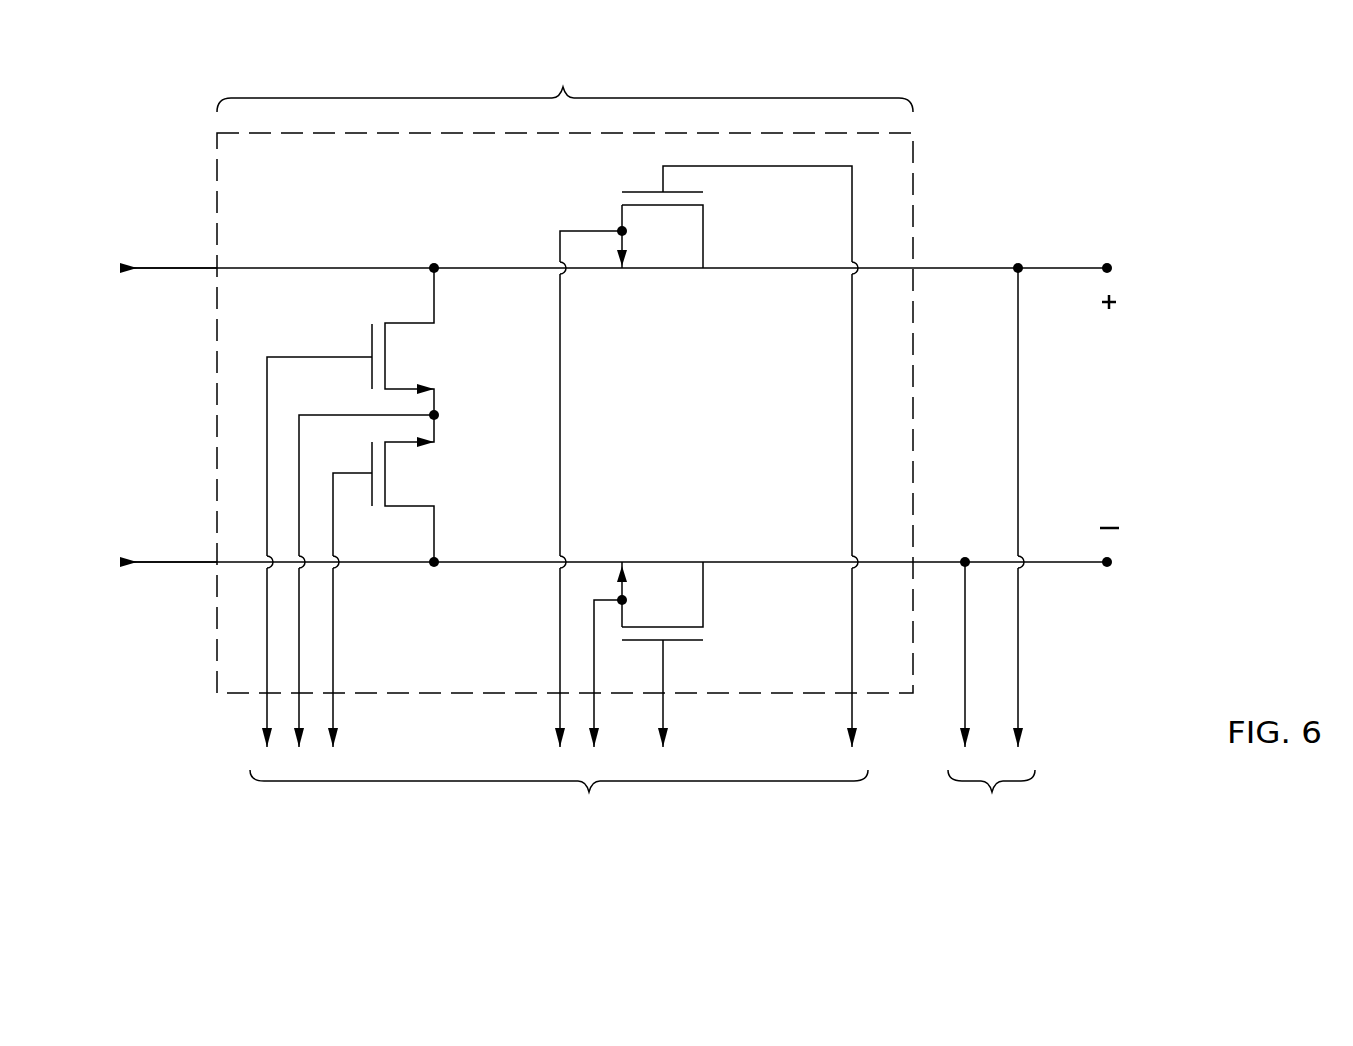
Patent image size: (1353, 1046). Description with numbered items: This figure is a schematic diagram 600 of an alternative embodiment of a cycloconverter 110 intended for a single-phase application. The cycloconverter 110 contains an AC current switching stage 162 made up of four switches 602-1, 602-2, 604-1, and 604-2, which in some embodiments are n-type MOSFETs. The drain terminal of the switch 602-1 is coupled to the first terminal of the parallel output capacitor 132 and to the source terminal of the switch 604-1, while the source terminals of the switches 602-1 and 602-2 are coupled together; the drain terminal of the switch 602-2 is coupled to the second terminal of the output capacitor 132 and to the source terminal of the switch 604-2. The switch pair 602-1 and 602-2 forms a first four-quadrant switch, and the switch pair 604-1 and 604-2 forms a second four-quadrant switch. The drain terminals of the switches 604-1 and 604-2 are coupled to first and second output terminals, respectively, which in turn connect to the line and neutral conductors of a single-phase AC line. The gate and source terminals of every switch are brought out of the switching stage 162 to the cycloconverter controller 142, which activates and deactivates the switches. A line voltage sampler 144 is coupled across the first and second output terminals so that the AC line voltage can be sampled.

The cycloconverter circuit 600 is at (1270, 91).
The cycloconverter 110 is at (913, 165).
The AC current switching stage 162 is at (565, 83).
The switch 602-1 is at (412, 358).
The switch 602-2 is at (412, 473).
The switch 604-1 is at (703, 215).
The switch 604-2 is at (703, 611).
The parallel output capacitor 132 is at (142, 415).
The cycloconverter controller 142 is at (559, 811).
The line voltage sampler 144 is at (993, 562).